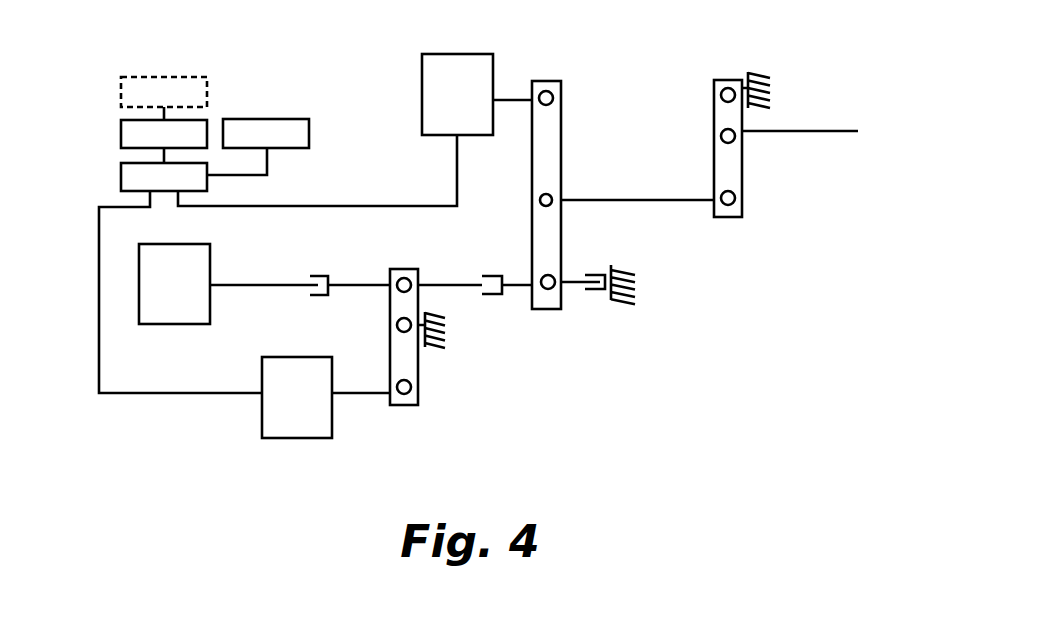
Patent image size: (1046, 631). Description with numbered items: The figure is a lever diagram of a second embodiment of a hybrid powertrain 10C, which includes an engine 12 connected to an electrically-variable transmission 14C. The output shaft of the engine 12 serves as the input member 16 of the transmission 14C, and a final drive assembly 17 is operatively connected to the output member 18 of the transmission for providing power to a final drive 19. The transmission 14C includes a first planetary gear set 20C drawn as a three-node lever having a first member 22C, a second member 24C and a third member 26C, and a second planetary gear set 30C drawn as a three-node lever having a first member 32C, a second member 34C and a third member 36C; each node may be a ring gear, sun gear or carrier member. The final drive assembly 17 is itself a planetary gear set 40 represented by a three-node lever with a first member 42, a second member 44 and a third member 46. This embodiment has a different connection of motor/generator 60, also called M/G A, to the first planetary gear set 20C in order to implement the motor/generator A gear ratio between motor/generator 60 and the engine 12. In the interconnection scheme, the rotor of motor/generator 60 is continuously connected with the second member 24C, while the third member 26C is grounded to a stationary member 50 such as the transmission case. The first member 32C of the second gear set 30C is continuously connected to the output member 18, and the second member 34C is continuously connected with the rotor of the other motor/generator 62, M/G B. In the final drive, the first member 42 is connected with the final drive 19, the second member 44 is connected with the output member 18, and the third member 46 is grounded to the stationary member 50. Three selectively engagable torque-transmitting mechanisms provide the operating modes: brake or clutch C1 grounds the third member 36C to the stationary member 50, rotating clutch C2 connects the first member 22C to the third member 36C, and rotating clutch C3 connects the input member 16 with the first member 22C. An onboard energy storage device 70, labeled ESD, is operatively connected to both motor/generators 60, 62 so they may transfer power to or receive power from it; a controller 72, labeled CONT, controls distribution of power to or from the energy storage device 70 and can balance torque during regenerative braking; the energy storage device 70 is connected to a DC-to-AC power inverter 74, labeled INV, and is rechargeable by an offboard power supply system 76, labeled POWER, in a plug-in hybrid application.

The powertrain 10C is at (815, 82).
The engine 12 is at (163, 296).
The transmission 14C is at (335, 73).
The input member 16 is at (262, 285).
The final drive assembly 17 is at (688, 91).
The output member 18 is at (657, 201).
The final drive 19 is at (825, 132).
The first planetary gear set 20C is at (418, 396).
The first member 22C is at (404, 278).
The second member 24C is at (404, 394).
The third member 26C is at (397, 325).
The second planetary gear set 30C is at (561, 113).
The first member 32C is at (552, 196).
The second member 34C is at (546, 91).
The third member 36C is at (548, 289).
The planetary gear set 40 is at (714, 120).
The first member 42 is at (735, 140).
The second member 44 is at (735, 202).
The third member 46 is at (727, 88).
The stationary member 50 is at (432, 348).
The motor/generator 60 is at (293, 438).
The motor/generator 62 is at (422, 100).
The energy storage device 70 is at (121, 134).
The controller 72 is at (267, 119).
The power inverter 74 is at (121, 177).
The offboard power supply system 76 is at (143, 77).
The brake or clutch C1 is at (602, 262).
The clutch C2 is at (505, 262).
The clutch C3 is at (316, 262).